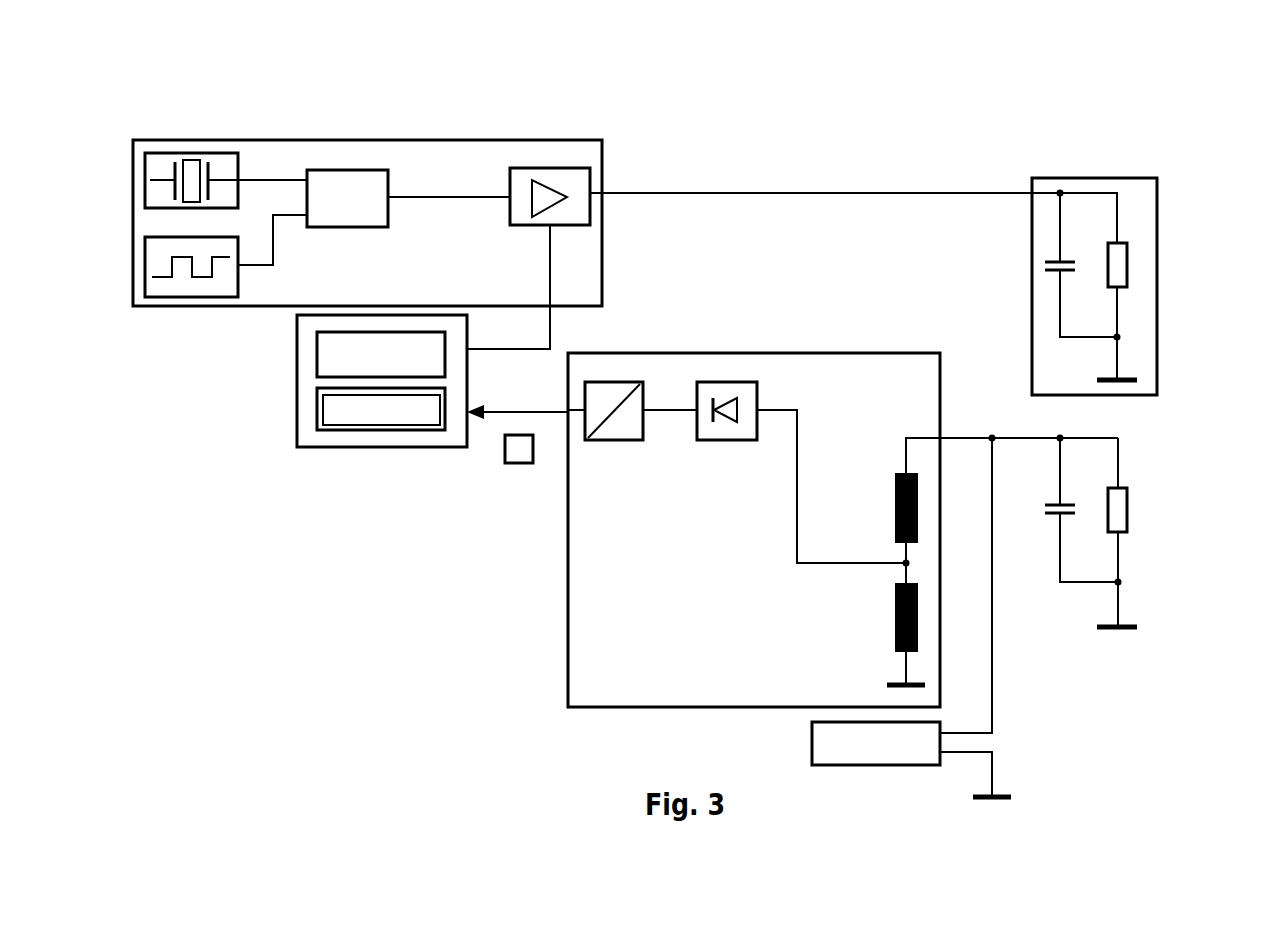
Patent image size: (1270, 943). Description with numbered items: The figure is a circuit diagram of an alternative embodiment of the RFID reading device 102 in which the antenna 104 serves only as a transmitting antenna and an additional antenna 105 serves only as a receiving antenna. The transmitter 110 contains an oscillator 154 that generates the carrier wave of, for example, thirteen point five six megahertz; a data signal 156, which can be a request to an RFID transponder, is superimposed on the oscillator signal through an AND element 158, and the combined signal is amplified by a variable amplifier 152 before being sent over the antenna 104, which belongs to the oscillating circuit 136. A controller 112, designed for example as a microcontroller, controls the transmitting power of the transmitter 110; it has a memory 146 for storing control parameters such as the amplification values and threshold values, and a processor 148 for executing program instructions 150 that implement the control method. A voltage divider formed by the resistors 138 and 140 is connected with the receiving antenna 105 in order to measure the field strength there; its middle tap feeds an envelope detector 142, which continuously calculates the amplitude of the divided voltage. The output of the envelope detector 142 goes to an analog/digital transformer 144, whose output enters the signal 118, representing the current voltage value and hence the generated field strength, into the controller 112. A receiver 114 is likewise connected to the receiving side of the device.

The RFID reading device 102 is at (706, 150).
The antenna 104 is at (1127, 265).
The additional antenna 105 is at (1127, 510).
The transmitter 110 is at (447, 140).
The controller 112 is at (310, 447).
The receiver 114 is at (876, 765).
The signal 118 is at (520, 463).
The oscillating circuit 136 is at (1095, 178).
The resistor 138 is at (895, 510).
The resistor 140 is at (895, 620).
The envelope detector 142 is at (727, 440).
The analog/digital transformer 144 is at (615, 440).
The memory 146 is at (317, 355).
The processor 148 is at (317, 410).
The program instructions 150 is at (383, 430).
The variable amplifier 152 is at (550, 168).
The oscillator 154 is at (192, 153).
The data signal 156 is at (193, 297).
The AND element 158 is at (348, 170).